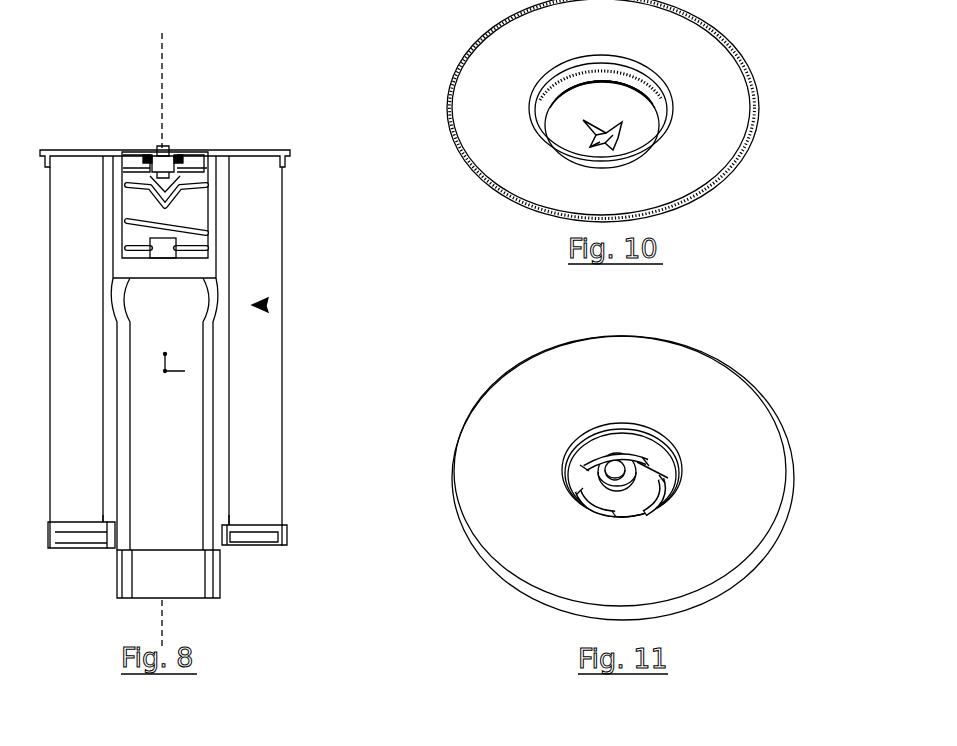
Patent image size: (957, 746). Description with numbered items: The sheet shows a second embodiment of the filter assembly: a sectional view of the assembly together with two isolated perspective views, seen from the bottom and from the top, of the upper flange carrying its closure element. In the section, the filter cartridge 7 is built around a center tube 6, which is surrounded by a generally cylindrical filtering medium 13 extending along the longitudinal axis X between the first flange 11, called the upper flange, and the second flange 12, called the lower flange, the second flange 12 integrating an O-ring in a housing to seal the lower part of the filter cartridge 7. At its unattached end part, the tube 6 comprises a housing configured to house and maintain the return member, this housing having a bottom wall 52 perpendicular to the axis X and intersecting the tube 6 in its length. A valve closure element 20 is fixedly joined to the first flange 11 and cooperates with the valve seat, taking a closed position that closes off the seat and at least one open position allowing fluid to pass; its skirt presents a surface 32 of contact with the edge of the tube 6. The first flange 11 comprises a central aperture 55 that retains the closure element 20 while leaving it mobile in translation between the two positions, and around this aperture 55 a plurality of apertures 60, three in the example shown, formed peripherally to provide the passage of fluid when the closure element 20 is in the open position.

In FIG. 8, the tube 6 is at (212, 425).
In FIG. 8, the filter cartridge 7 is at (268, 305).
In FIG. 8, the first flange 11 is at (255, 150).
In FIG. 10, the first flange 11 is at (755, 130).
In FIG. 11, the first flange 11 is at (570, 343).
In FIG. 8, the second flange 12 is at (265, 546).
In FIG. 8, the filtering medium 13 is at (272, 240).
In FIG. 8, the valve closure element 20 is at (195, 165).
In FIG. 10, the valve closure element 20 is at (588, 140).
In FIG. 11, the valve closure element 20 is at (640, 468).
In FIG. 10, the contact surface 32 is at (585, 152).
In FIG. 8, the bottom wall 52 is at (200, 268).
In FIG. 8, the central aperture 55 is at (180, 165).
In FIG. 8, the apertures 60 is at (145, 155).
In FIG. 11, the apertures 60 is at (634, 462).